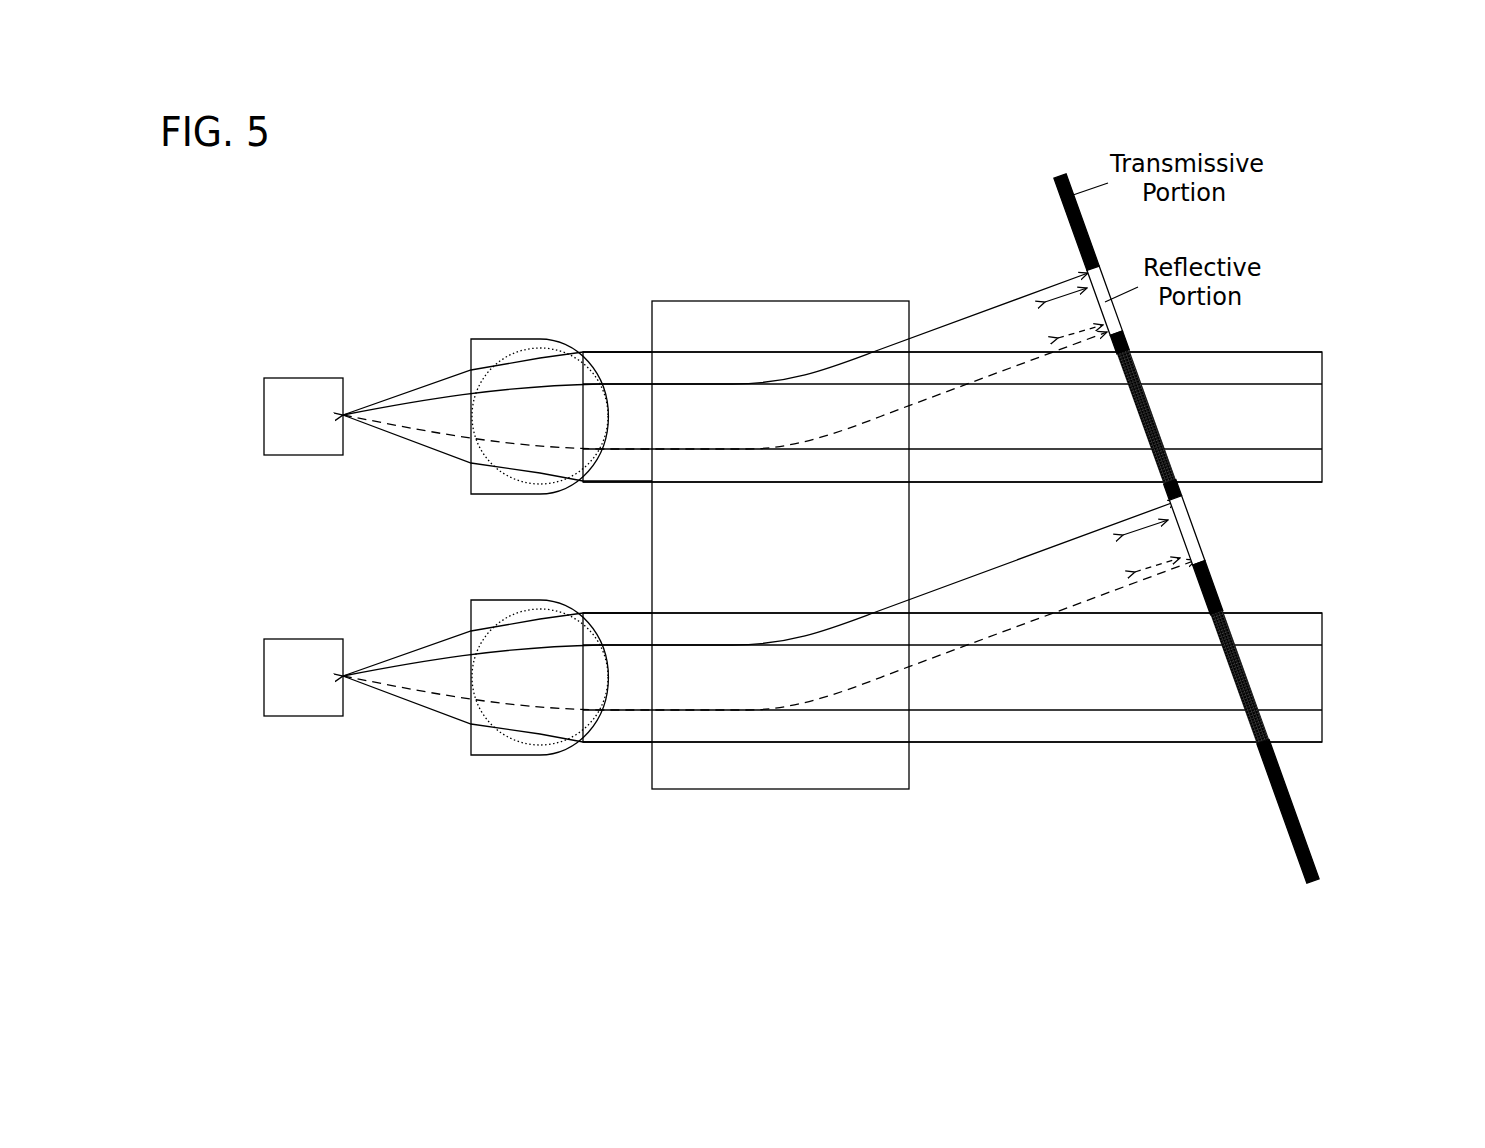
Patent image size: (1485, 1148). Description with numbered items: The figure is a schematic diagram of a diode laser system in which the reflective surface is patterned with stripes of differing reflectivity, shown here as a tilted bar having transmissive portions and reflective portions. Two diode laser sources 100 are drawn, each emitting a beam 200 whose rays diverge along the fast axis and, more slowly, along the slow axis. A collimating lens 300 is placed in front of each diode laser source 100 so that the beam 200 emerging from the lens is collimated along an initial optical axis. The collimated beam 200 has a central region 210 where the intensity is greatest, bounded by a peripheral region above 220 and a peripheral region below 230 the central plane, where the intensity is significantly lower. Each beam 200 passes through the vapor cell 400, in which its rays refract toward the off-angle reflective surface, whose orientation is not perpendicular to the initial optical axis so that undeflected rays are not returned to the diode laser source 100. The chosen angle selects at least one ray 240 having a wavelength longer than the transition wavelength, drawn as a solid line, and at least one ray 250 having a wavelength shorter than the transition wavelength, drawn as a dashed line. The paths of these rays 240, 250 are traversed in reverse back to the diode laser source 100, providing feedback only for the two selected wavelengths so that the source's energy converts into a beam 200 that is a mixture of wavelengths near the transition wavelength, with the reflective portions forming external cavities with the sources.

The diode laser source 100 is at (324, 430).
The collimated beam 200 is at (394, 356).
The collimating lens 300 is at (518, 339).
The vapor cell 400 is at (803, 558).
The central region 210 is at (1303, 413).
The peripheral region above 220 is at (1283, 361).
The peripheral region below 230 is at (1283, 474).
The ray 240 is at (1033, 294).
The ray 250 is at (1034, 359).